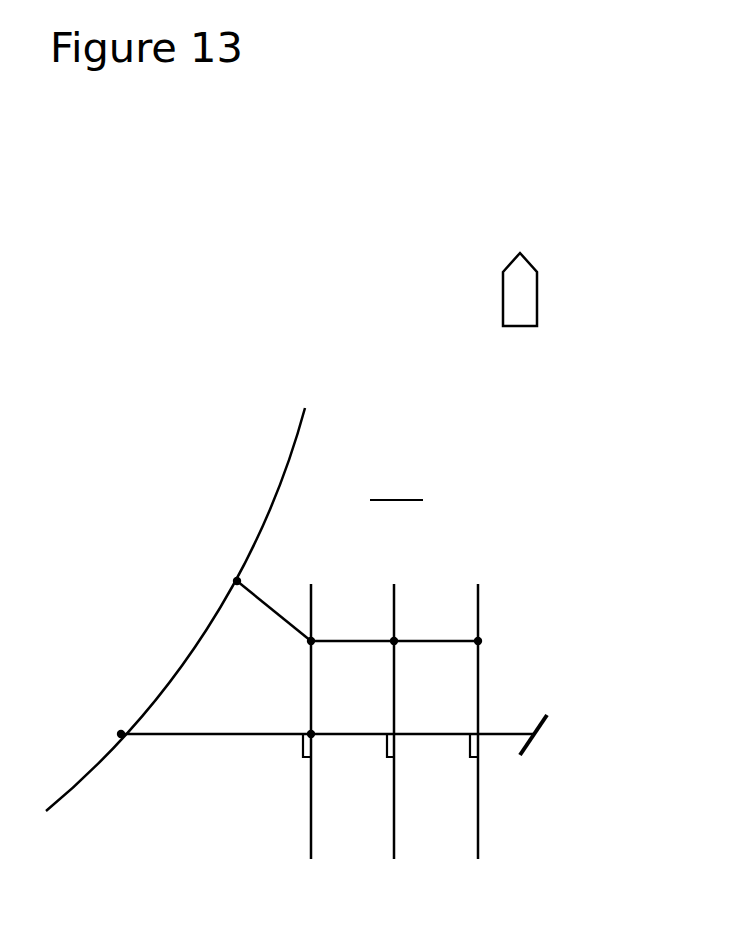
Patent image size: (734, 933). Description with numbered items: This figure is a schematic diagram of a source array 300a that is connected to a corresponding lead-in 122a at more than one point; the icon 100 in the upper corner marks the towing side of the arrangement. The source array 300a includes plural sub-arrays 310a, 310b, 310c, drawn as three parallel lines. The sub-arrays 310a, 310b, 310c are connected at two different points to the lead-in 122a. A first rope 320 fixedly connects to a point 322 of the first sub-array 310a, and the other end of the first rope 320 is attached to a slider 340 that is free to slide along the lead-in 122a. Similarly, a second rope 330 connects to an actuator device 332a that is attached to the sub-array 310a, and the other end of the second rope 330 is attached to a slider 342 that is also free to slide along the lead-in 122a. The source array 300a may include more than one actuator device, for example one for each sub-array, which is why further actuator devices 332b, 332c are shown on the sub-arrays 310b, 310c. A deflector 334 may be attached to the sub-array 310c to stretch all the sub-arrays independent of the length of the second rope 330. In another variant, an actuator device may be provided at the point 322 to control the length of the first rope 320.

The robotic vehicle 100 is at (524, 292).
The lead-in 122a is at (278, 495).
The source array 300a is at (396, 486).
The first sub-array 310a is at (313, 681).
The sub-array 310b is at (396, 681).
The sub-array 310c is at (480, 681).
The first rope 320 is at (265, 600).
The point 322 is at (313, 637).
The second rope 330 is at (175, 734).
The actuator device 332a is at (302, 750).
The actuator device 332b is at (385, 750).
The actuator device 332c is at (468, 750).
The deflector 334 is at (530, 747).
The slider 340 is at (234, 579).
The slider 342 is at (117, 732).